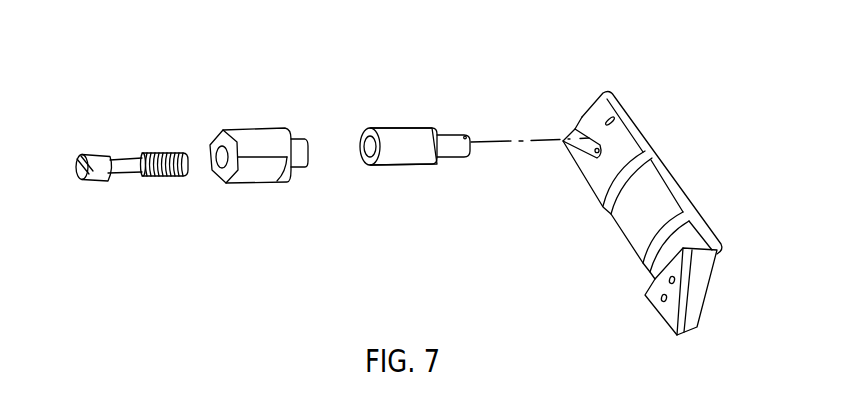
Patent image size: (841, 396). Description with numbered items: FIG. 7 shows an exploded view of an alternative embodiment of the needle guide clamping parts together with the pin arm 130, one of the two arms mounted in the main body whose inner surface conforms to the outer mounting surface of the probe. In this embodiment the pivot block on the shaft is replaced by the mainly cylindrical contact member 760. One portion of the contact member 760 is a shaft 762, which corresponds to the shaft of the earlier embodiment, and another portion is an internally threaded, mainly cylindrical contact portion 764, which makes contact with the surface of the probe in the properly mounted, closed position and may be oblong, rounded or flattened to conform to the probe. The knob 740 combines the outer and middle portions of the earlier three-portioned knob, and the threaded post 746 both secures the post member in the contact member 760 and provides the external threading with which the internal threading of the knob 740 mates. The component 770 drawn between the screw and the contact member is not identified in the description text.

The pin arm 130 is at (660, 153).
The knob 740 is at (160, 144).
The threaded post 746 is at (163, 178).
The contact member 760 is at (420, 130).
The shaft 762 is at (452, 129).
The internally threaded, mainly cylindrical portion 764 is at (400, 167).
The nut 770 is at (248, 129).